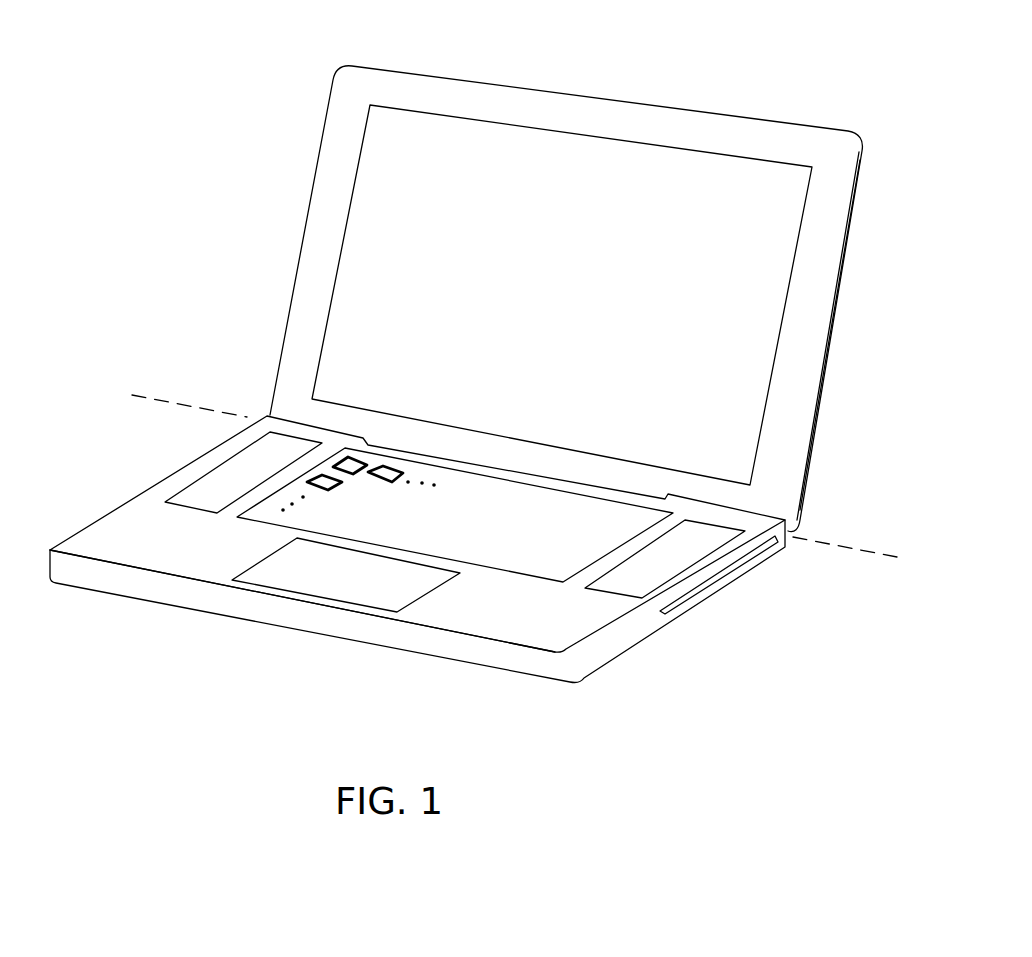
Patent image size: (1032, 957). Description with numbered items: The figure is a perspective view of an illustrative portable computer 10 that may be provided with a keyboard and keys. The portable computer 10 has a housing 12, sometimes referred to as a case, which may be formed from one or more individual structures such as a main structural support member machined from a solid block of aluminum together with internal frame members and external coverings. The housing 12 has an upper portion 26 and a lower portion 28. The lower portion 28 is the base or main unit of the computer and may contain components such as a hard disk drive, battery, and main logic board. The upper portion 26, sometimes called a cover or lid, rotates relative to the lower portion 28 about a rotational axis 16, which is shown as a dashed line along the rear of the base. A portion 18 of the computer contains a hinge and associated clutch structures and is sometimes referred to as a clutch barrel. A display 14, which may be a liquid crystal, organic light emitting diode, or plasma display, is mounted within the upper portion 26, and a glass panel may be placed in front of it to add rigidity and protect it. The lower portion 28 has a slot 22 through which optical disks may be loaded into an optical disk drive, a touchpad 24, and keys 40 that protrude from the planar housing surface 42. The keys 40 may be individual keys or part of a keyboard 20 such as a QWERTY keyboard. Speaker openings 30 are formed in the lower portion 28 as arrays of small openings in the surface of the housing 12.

The portable computer 10 is at (781, 55).
The housing 12 is at (283, 128).
The display 14 is at (578, 150).
The rotational axis 16 is at (162, 400).
The clutch barrel 18 is at (451, 440).
The keyboard 20 is at (530, 565).
The slot 22 is at (732, 568).
The touchpad 24 is at (260, 575).
The upper portion 26 is at (822, 347).
The lower portion 28 is at (522, 668).
The speaker openings 30 is at (185, 496).
The keys 40 is at (337, 483).
The planar housing surface 42 is at (482, 555).